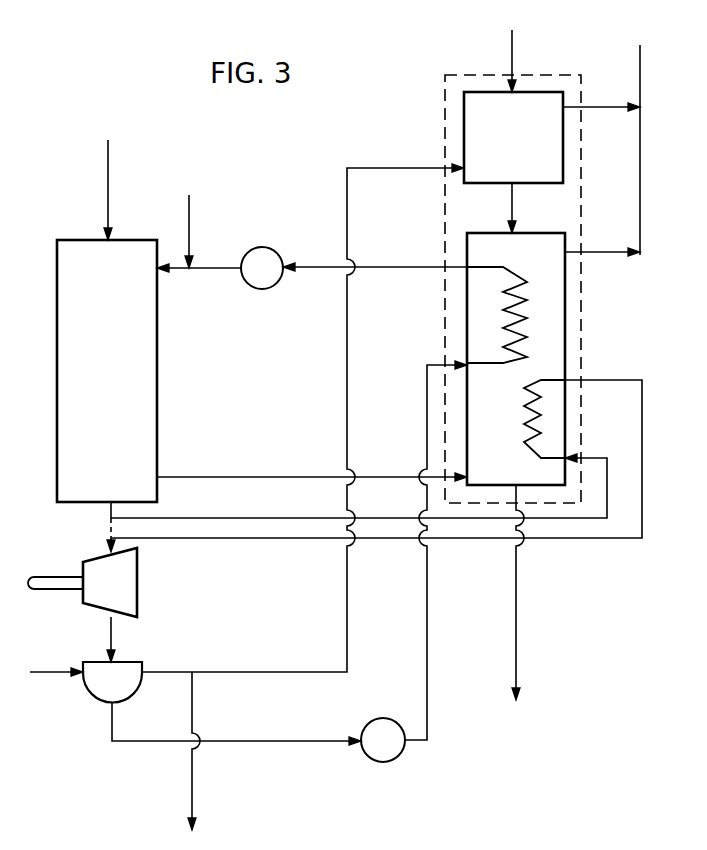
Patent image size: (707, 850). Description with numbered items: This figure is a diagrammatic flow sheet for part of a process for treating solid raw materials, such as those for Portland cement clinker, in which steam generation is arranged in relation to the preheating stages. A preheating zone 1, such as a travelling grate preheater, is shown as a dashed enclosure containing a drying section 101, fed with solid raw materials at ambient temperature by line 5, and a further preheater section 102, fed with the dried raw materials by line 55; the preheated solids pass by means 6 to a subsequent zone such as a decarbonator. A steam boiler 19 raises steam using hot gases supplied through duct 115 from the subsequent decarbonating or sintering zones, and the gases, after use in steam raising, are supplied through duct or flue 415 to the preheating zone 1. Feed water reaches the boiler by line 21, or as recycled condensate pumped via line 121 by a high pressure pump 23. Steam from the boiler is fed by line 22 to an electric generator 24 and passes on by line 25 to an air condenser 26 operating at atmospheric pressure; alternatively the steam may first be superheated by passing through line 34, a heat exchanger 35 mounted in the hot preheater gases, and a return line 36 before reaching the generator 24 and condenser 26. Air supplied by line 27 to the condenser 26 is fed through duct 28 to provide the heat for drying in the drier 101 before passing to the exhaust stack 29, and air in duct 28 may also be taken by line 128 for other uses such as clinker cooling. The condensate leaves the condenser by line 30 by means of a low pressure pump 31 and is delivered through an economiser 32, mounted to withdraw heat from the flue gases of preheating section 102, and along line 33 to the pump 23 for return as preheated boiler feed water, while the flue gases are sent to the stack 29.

The preheating zone 1 is at (582, 303).
The line 5 is at (510, 56).
The means 6 is at (516, 617).
The steam boiler 19 is at (117, 376).
The line 21 is at (189, 212).
The line 22 is at (104, 539).
The high pressure pump 23 is at (266, 262).
The electric generator 24 is at (121, 594).
The line 25 is at (114, 638).
The air condenser 26 is at (124, 688).
The line 27 is at (62, 682).
The duct 28 is at (303, 674).
The exhaust stack 29 is at (638, 82).
The line 30 is at (270, 744).
The low pressure pump 31 is at (392, 752).
The economiser 32 is at (534, 286).
The line 33 is at (397, 270).
The line 34 is at (268, 518).
The heat exchanger 35 is at (522, 444).
The return line 36 is at (320, 541).
The line 55 is at (510, 209).
The drying section 101 is at (531, 150).
The further preheater section 102 is at (509, 405).
The duct 115 is at (108, 178).
The line 121 is at (176, 270).
The line 128 is at (194, 703).
The duct or flue 415 is at (264, 477).